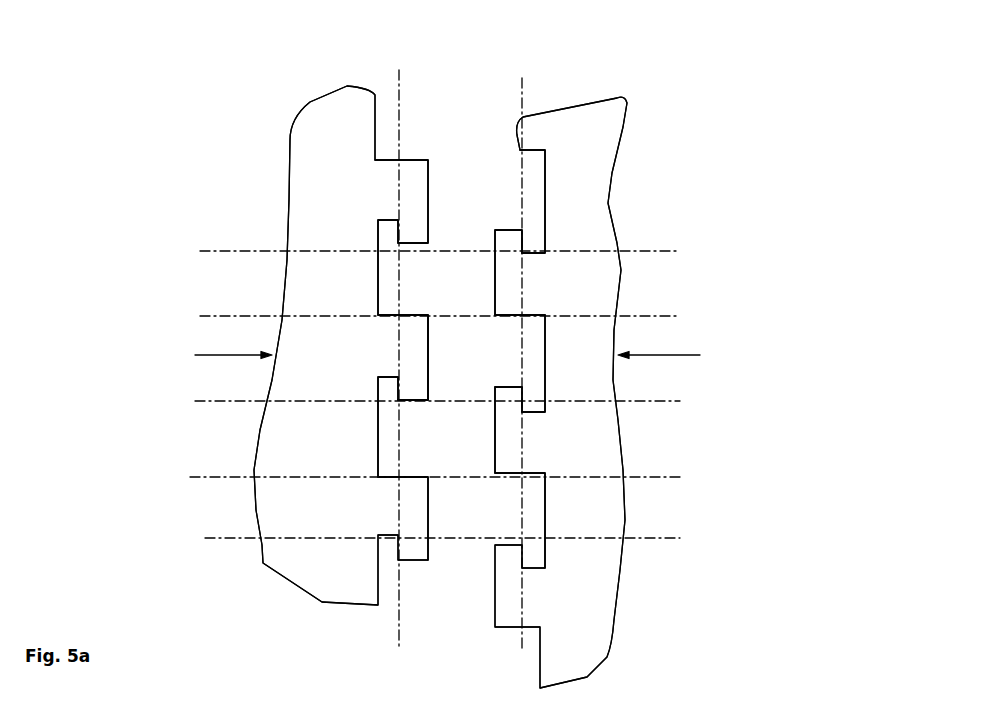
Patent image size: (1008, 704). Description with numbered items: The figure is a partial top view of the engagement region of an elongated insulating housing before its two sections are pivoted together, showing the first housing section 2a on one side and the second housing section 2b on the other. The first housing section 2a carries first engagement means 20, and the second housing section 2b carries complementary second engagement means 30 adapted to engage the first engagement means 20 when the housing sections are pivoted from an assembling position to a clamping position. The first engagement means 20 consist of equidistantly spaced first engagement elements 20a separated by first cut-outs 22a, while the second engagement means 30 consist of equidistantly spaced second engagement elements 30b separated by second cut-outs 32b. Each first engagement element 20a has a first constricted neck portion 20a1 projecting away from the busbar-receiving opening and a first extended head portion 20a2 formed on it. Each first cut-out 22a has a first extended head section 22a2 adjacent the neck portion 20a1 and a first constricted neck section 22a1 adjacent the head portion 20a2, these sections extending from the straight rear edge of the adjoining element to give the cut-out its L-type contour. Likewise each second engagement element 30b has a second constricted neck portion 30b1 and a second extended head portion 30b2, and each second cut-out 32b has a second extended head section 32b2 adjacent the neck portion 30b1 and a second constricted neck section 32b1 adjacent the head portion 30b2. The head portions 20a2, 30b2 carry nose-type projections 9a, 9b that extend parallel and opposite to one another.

The first engagement means 20 is at (396, 125).
The second engagement means 30 is at (505, 133).
The first housing section 2a is at (351, 574).
The second housing section 2b is at (599, 597).
The first engagement element 20a is at (379, 184).
The first cut-out 22a is at (383, 281).
The first constricted neck portion 20a1 is at (387, 348).
The first extended head portion 20a2 is at (420, 355).
The first extended head section 22a2 is at (392, 390).
The nose-type projection 9a is at (410, 393).
The first constricted neck section 22a1 is at (413, 443).
The second cut-out 32b is at (535, 192).
The second engagement element 30b is at (538, 276).
The second constricted neck section 32b1 is at (502, 345).
The second extended head section 32b2 is at (535, 366).
The nose-type projection 9b is at (508, 393).
The second extended head portion 30b2 is at (508, 416).
The second constricted neck portion 30b1 is at (537, 449).